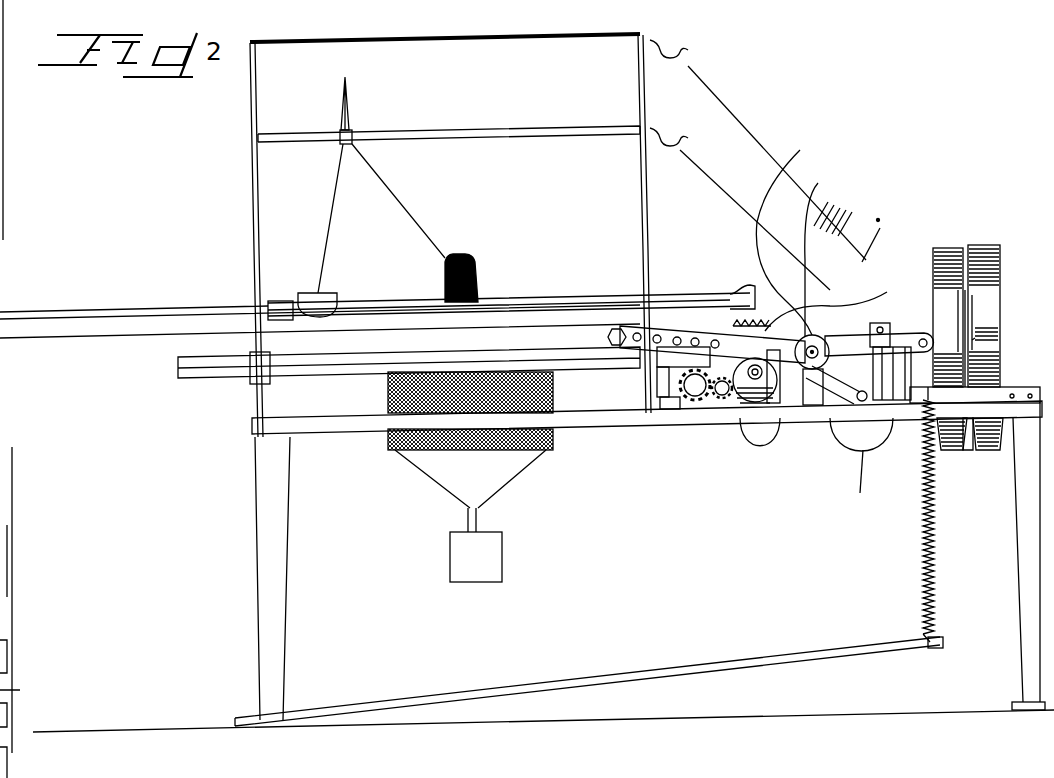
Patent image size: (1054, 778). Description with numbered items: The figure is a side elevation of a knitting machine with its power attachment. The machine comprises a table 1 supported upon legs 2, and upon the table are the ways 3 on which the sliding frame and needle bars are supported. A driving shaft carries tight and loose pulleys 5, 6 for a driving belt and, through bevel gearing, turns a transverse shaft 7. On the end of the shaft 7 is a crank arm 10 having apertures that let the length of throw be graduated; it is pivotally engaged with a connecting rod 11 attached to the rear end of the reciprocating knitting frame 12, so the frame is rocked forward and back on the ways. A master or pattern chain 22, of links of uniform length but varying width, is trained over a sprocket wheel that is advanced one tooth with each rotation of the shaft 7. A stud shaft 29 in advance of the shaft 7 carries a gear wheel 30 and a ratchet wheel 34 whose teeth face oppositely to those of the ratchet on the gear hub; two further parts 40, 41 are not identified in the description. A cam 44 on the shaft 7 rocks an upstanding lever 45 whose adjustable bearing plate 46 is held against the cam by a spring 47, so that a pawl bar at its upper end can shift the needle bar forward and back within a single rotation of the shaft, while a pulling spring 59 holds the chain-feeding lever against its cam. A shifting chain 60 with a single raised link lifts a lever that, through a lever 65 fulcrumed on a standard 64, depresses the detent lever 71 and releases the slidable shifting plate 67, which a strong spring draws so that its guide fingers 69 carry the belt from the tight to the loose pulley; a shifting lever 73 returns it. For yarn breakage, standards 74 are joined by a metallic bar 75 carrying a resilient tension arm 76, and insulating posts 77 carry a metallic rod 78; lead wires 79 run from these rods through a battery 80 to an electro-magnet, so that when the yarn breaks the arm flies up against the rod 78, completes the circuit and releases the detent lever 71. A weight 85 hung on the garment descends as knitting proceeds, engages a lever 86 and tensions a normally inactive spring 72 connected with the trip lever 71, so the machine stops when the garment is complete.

The table 1 is at (357, 432).
The legs 2 is at (270, 623).
The ways 3 is at (213, 377).
The tight pulley 5 is at (982, 258).
The loose pulley 6 is at (952, 257).
The shaft 7 is at (881, 231).
The crank arm 10 is at (735, 342).
The connecting rod 11 is at (158, 322).
The knitting frame 12 is at (560, 302).
The master or pattern chain 22 is at (856, 485).
The stud shaft 29 is at (753, 375).
The gear wheel 30 is at (723, 380).
The ratchet wheel 34 is at (763, 382).
The gear 40 is at (687, 388).
The pinion 41 is at (693, 390).
The cam 44 is at (828, 245).
The upstanding lever 45 is at (873, 320).
The adjustable bearing plate 46 is at (843, 347).
The spring 47 is at (847, 403).
The pulling spring 59 is at (807, 360).
The shifting chain 60 is at (780, 407).
The standard 64 is at (880, 390).
The lever 65 is at (930, 300).
The shifting plate 67 is at (977, 390).
The guide fingers 69 is at (990, 335).
The detent lever 71 is at (935, 395).
The spring or other connection 72 is at (925, 558).
The shifting lever 73 is at (1018, 388).
The standards 74 is at (257, 240).
The metallic bar or rod 75 is at (557, 128).
The resilient tension arm 76 is at (348, 113).
The insulating posts 77 is at (253, 95).
The metallic rod or wire 78 is at (450, 40).
The lead wires 79 is at (777, 200).
The battery 80 is at (835, 222).
The weight 85 is at (472, 560).
The lever 86 is at (553, 693).